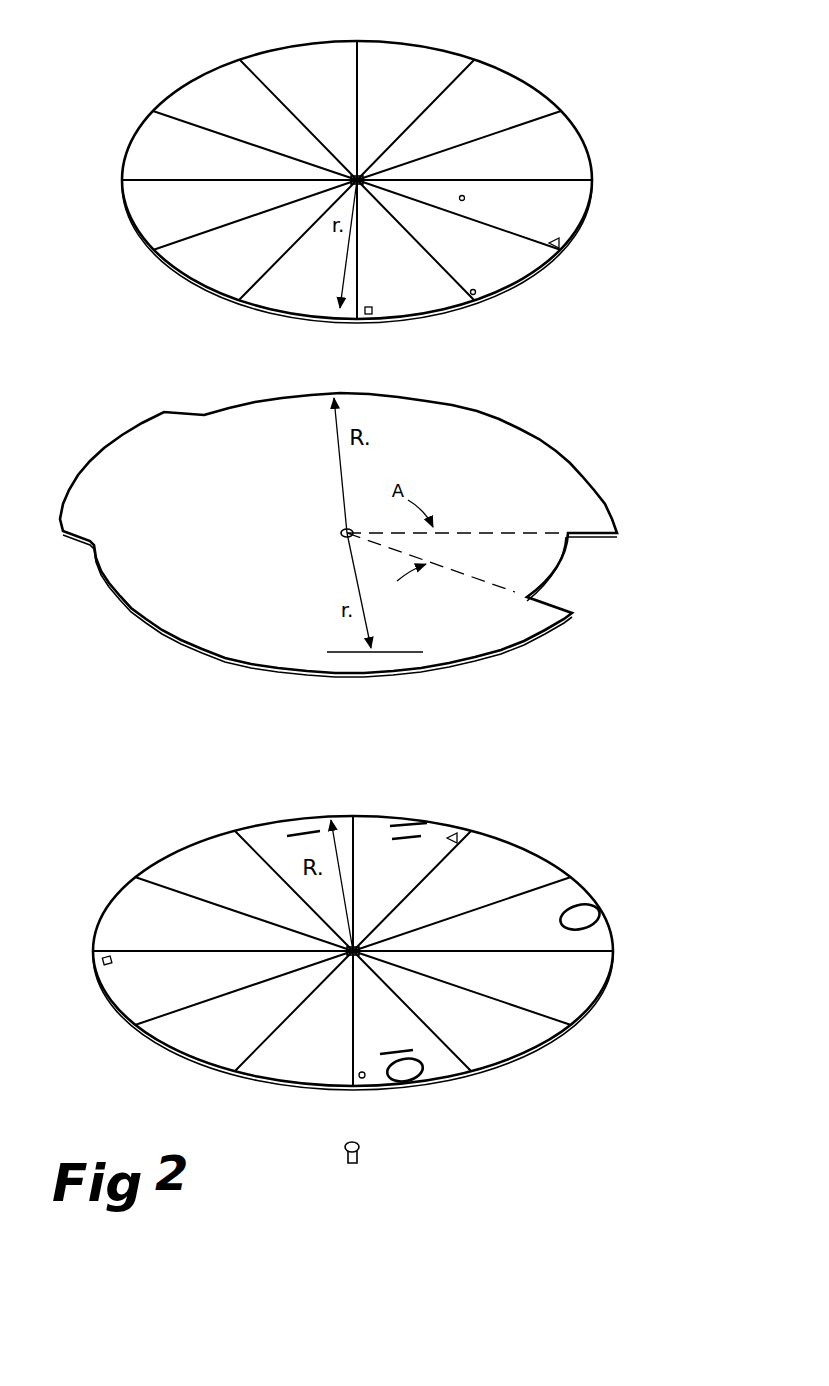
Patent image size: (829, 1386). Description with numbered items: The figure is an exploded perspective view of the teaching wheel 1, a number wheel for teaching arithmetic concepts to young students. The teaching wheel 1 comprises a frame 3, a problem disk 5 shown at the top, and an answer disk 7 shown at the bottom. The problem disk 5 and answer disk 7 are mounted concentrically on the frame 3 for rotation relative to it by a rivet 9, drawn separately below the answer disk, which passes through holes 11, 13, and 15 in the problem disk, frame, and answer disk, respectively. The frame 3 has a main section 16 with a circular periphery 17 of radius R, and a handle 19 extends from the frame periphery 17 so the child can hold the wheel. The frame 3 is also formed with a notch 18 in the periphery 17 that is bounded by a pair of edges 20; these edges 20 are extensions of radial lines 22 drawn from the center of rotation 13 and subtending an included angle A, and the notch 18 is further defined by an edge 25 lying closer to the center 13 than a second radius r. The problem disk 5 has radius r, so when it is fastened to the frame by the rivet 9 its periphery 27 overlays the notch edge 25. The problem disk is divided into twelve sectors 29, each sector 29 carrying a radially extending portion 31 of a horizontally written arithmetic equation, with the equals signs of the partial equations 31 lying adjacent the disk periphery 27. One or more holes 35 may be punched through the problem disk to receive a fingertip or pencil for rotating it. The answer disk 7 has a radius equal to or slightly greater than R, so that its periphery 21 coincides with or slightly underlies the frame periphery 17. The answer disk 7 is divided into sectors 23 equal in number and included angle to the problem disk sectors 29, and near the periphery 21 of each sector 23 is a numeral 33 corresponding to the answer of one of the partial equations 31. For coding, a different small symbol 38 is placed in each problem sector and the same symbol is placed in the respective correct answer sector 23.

The teaching wheel 1 is at (550, 386).
The frame 3 is at (618, 491).
The problem disk 5 is at (536, 90).
The answer disk 7 is at (580, 880).
The rivet 9 is at (344, 1152).
The hole 11 is at (360, 179).
The hole 13 is at (346, 529).
The hole 15 is at (350, 953).
The main section 16 is at (214, 560).
The periphery 17 is at (267, 397).
The notch 18 is at (600, 558).
The handle 19 is at (132, 437).
The edges 20 is at (602, 543).
The periphery 21 is at (600, 995).
The radial lines 22 is at (540, 533).
The sectors 23 is at (487, 932).
The edge 25 is at (567, 562).
The periphery 27 is at (536, 278).
The sectors 29 is at (375, 138).
The portion of arithmetic equation 31 is at (322, 62).
The numeral 33 is at (515, 853).
The hole 35 is at (459, 197).
The symbol 38 is at (560, 243).